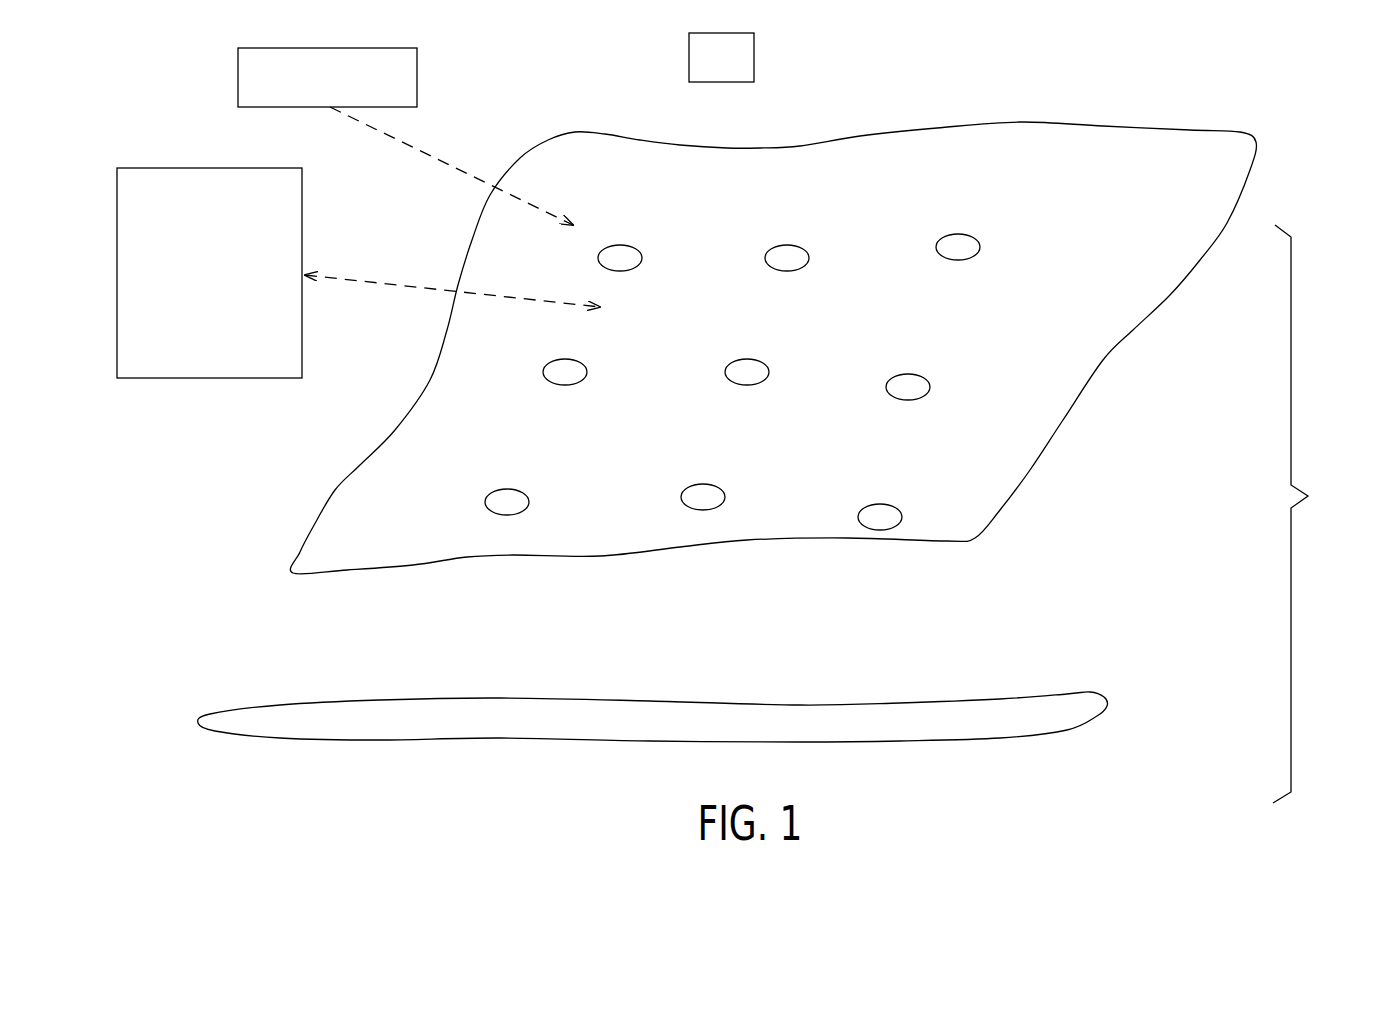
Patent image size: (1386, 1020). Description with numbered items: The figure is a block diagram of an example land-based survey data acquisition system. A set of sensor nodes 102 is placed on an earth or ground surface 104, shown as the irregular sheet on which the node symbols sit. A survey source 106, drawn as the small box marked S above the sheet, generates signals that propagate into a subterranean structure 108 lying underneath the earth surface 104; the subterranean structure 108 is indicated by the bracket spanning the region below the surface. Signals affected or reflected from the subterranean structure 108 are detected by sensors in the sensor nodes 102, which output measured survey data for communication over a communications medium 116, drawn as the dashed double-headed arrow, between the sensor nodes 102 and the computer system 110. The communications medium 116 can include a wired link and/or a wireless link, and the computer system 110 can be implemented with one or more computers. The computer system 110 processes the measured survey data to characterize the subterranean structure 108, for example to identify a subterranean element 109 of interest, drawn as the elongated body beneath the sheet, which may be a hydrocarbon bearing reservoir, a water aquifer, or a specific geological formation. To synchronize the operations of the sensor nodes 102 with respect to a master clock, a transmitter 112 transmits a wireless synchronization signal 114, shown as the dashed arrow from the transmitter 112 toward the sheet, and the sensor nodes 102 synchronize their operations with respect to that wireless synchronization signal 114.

The sensor nodes 102 is at (787, 271).
The earth surface 104 is at (1155, 272).
The survey source 106 is at (754, 57).
The subterranean structure 108 is at (1312, 514).
The subterranean element of interest 109 is at (1057, 718).
The computer system 110 is at (207, 378).
The transmitter 112 is at (238, 78).
The wireless synchronization signal 114 is at (611, 166).
The communications medium 116 is at (366, 278).